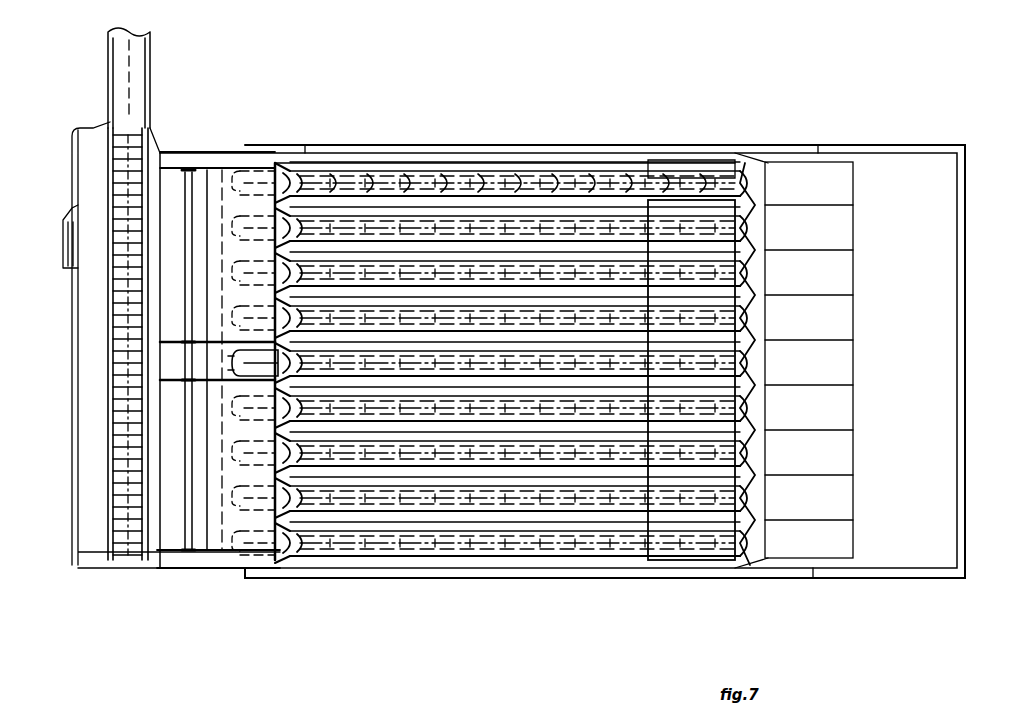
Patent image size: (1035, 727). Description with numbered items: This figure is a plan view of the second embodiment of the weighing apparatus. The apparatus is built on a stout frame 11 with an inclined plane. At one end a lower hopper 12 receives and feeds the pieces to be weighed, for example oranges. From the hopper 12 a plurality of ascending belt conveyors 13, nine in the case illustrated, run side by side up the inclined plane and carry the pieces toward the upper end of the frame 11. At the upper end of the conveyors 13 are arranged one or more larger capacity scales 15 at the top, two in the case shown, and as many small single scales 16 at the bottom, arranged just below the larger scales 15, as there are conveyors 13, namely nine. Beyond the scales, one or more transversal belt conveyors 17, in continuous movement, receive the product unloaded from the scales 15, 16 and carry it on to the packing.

The frame 11 is at (731, 142).
The lower hopper 12 is at (915, 331).
The ascending belt conveyors 13 is at (330, 184).
The larger capacity scales 15 is at (215, 195).
The small single scales 16 is at (255, 185).
The transversal belt conveyors 17 is at (133, 372).